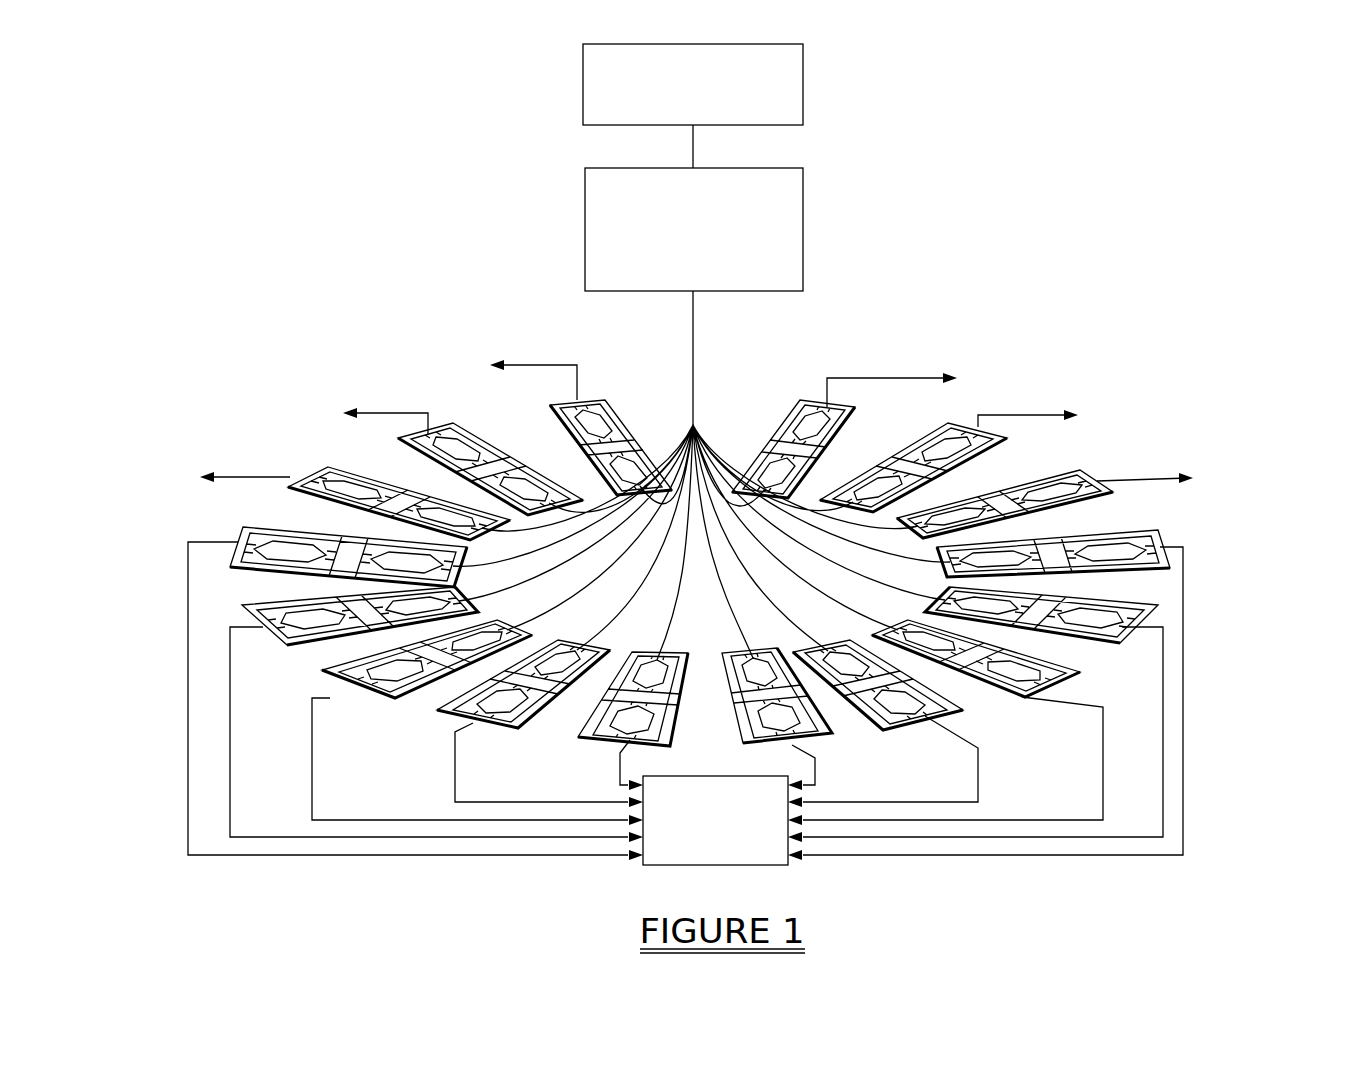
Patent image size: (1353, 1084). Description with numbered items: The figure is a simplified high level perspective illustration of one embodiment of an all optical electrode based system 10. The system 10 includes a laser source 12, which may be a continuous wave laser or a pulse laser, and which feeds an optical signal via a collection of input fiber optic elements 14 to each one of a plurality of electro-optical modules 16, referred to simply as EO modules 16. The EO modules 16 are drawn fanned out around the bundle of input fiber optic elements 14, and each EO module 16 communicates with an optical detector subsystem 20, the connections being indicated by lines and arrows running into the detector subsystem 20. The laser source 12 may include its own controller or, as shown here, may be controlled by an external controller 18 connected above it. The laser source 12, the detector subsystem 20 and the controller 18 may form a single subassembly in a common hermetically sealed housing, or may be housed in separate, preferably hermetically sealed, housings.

The all optical electrode based system 10 is at (962, 228).
The laser source 12 is at (682, 271).
The input fiber optic elements 14 is at (696, 342).
The electro-optical modules 16 is at (607, 418).
The controller 18 is at (682, 111).
The optical detector subsystem 20 is at (705, 859).